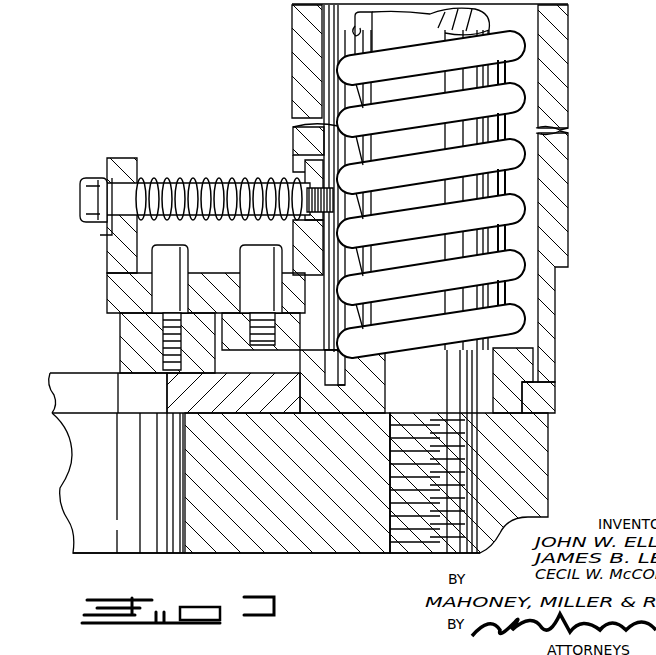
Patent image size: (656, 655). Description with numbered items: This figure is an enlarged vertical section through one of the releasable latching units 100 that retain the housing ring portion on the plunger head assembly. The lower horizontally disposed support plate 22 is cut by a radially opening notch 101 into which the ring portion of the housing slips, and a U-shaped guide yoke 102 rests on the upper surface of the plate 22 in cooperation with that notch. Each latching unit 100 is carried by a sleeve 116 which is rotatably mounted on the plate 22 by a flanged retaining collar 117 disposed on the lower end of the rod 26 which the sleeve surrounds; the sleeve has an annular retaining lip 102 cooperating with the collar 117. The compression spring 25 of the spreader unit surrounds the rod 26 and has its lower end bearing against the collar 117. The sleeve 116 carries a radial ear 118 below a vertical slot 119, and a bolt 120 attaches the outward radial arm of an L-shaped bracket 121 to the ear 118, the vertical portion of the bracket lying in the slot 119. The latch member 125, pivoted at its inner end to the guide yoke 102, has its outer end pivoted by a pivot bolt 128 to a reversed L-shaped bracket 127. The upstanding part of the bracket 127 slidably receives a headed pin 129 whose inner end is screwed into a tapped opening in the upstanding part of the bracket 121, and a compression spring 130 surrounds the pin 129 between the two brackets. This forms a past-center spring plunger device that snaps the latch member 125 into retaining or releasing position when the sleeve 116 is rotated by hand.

The lower support plate 22 is at (540, 463).
The compression spring 25 is at (518, 44).
The rod 26 is at (490, 185).
The releasable latching unit 100 is at (290, 52).
The radially opening notch 101 is at (177, 548).
The guide yoke 102 is at (80, 386).
The sleeve 116 is at (560, 106).
The flanged retaining collar 117 is at (525, 362).
The radial ear 118 is at (233, 318).
The vertical slot 119 is at (296, 158).
The bolt 120 is at (327, 326).
The L-shaped bracket 121 is at (312, 172).
The latch member 125 is at (130, 333).
The L-shaped bracket 127 is at (120, 165).
The pivot bolt 128 is at (170, 290).
The headed pin 129 is at (88, 193).
The compression spring 130 is at (181, 180).